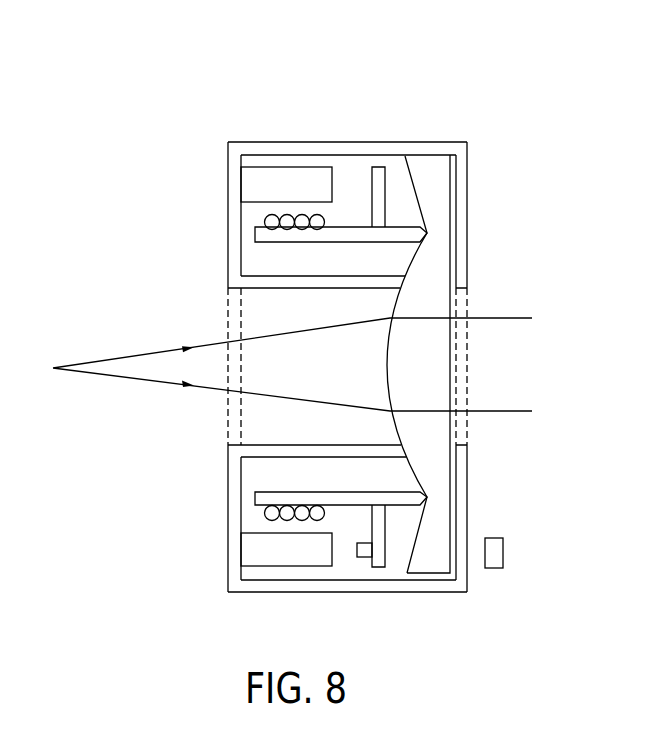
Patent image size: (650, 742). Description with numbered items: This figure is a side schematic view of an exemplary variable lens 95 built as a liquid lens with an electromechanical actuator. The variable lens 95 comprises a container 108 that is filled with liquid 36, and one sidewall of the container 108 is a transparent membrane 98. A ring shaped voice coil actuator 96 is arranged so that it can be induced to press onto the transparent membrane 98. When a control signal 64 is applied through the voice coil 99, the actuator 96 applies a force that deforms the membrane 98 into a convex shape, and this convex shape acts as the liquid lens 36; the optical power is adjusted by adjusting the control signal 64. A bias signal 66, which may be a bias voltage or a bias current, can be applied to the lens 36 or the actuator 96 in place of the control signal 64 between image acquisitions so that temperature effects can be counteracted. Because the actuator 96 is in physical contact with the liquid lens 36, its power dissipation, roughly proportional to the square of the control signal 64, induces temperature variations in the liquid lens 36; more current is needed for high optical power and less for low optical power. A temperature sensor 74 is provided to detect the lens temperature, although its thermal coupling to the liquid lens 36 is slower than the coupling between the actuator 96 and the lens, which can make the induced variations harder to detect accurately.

The variable lens 95 is at (530, 103).
The container 108 is at (345, 593).
The liquid lens 36 is at (432, 283).
The transparent membrane 98 is at (392, 367).
The control signal 64 is at (272, 206).
The bias signal 66 is at (318, 206).
The voice coil actuator 96 is at (378, 172).
The voice coil 99 is at (266, 513).
The temperature sensor 74 is at (503, 552).